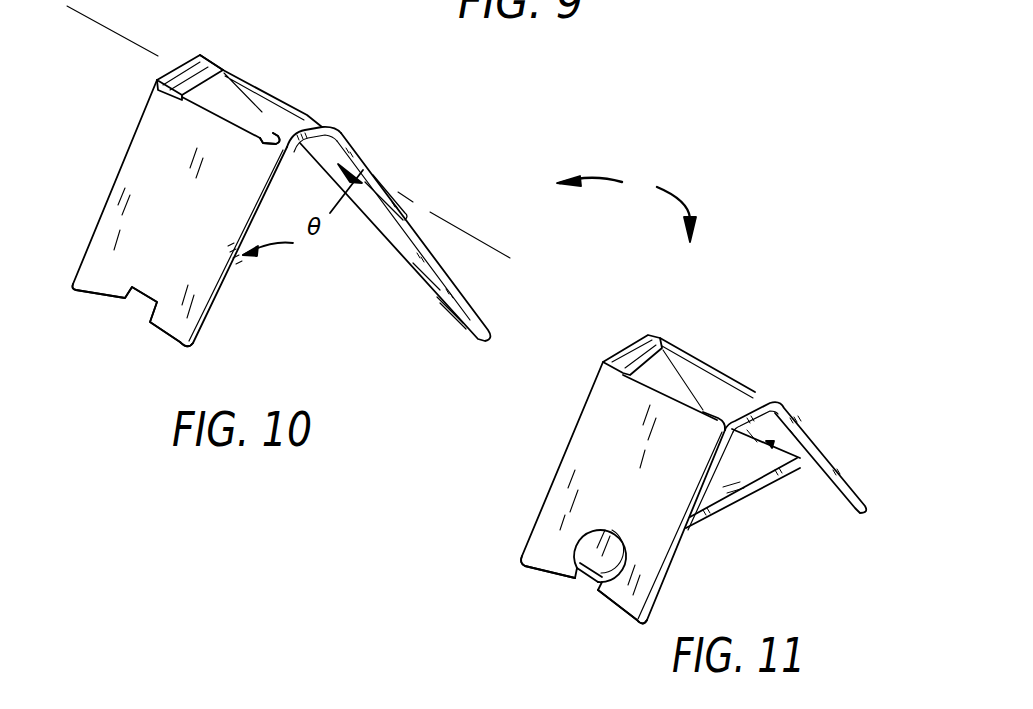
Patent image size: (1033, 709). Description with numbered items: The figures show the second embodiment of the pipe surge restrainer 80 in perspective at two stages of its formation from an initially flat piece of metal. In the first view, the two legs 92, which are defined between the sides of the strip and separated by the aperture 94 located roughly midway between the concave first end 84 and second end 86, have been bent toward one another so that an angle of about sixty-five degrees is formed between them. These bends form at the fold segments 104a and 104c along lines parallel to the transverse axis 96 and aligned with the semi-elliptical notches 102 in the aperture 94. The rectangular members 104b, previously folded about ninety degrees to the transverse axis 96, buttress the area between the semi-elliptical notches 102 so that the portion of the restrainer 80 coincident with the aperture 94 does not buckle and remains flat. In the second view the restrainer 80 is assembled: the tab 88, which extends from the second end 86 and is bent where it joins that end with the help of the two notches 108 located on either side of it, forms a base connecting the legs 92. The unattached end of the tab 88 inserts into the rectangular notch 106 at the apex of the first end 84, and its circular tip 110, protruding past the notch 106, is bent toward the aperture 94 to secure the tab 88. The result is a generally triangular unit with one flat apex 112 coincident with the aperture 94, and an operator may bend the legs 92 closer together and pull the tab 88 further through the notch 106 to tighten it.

In FIG. 11, the pipe surge restrainer 80 is at (626, 208).
In FIG. 10, the first end 84 is at (77, 288).
In FIG. 11, the first end 84 is at (599, 590).
In FIG. 11, the second end 86 is at (826, 476).
In FIG. 10, the tab 88 is at (413, 270).
In FIG. 11, the tab 88 is at (692, 527).
In FIG. 10, the legs 92 is at (157, 218).
In FIG. 11, the legs 92 is at (603, 432).
In FIG. 10, the aperture 94 is at (208, 108).
In FIG. 11, the aperture 94 is at (661, 374).
In FIG. 10, the transverse axis 96 is at (440, 212).
In FIG. 10, the semi-elliptical notches 102 is at (173, 66).
In FIG. 10, the fold segment 104a is at (157, 80).
In FIG. 10, the rectangular member 104b is at (212, 64).
In FIG. 10, the second fold segment 104c is at (316, 116).
In FIG. 11, the rectangular notch 106 is at (577, 583).
In FIG. 11, the notches 108 is at (800, 462).
In FIG. 11, the circular tip 110 is at (596, 544).
In FIG. 11, the flat apex 112 is at (624, 354).